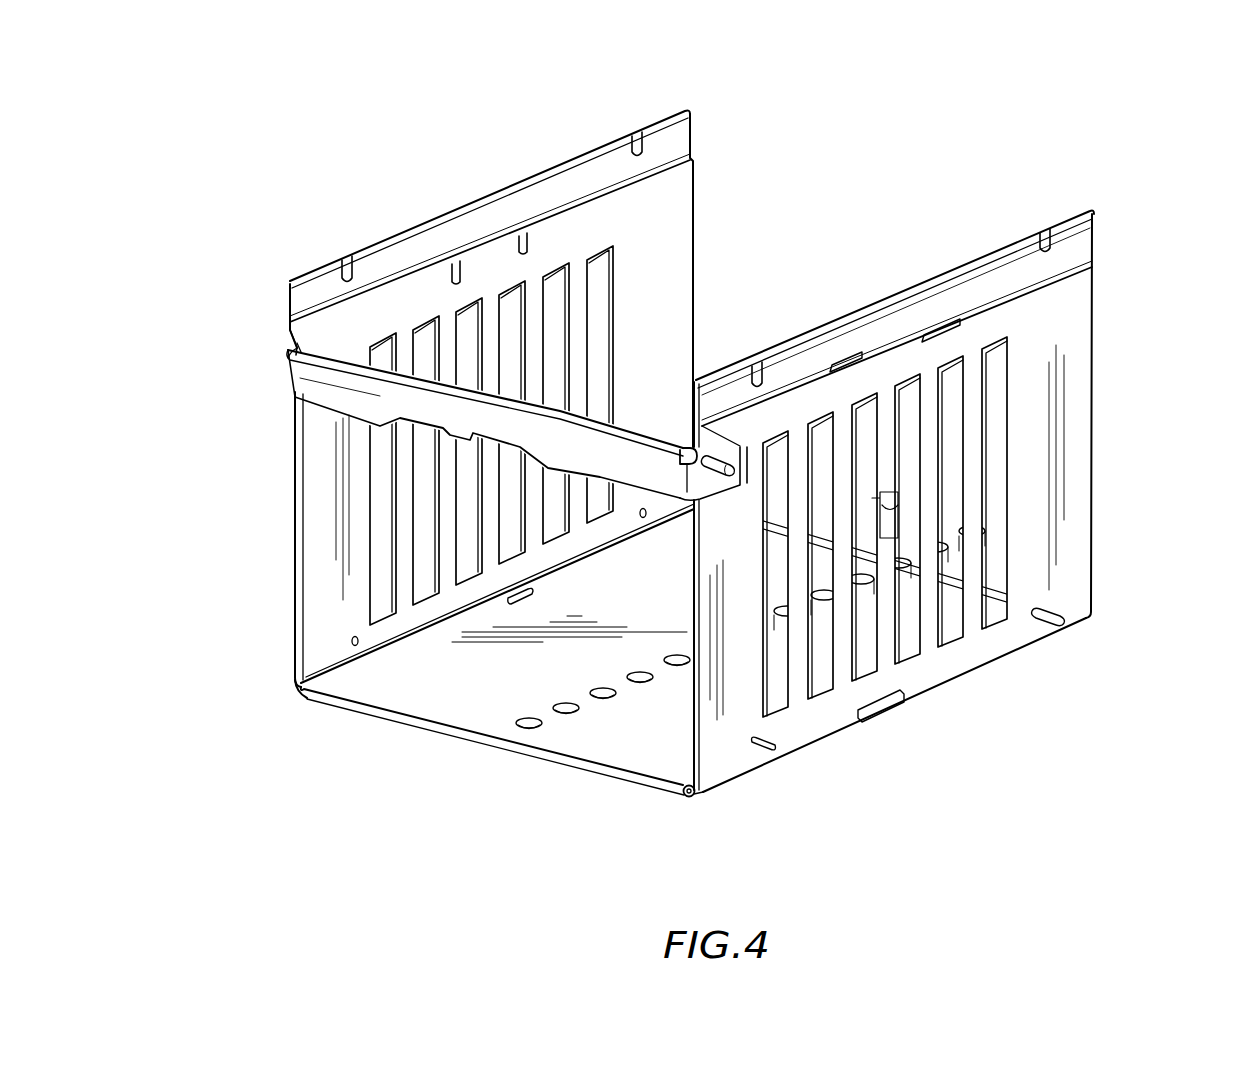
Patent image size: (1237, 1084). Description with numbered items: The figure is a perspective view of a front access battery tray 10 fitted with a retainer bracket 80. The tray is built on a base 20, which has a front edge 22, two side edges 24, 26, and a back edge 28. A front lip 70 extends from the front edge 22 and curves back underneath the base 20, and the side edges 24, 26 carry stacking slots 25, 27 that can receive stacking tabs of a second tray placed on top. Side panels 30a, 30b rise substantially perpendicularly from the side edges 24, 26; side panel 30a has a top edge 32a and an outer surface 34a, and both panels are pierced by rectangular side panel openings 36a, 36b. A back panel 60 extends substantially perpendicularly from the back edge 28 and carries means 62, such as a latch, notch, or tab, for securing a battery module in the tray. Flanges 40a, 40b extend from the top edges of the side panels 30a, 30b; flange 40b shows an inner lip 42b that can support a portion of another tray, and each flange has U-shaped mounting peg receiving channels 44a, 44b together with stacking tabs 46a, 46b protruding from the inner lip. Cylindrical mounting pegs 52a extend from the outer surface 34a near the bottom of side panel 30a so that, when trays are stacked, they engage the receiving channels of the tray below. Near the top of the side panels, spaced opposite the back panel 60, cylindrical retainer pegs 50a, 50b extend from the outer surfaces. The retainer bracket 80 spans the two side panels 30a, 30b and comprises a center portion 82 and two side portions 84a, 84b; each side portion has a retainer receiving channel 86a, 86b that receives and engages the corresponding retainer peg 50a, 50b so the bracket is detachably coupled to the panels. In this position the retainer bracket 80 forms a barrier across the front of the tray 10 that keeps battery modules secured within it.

The front access battery tray 10 is at (1166, 112).
The base 20 is at (670, 790).
The front edge 22 is at (440, 738).
The side edge 24 is at (298, 690).
The stacking slot 25 is at (510, 600).
The side edge 26 is at (696, 798).
The stacking slot 27 is at (880, 700).
The back edge 28 is at (1010, 640).
The side panel 30a is at (1092, 408).
The side panel 30b is at (295, 485).
The top edge 32a is at (1093, 264).
The outer surface 34a is at (1085, 480).
The side panel openings 36a is at (960, 680).
The side panel openings 36b is at (378, 345).
The flange 40a is at (945, 268).
The flange 40b is at (520, 183).
The inner lip 42b is at (700, 165).
The mounting peg receiving channels 44a is at (752, 364).
The mounting peg receiving channels 44b is at (345, 256).
The stacking tab 46a is at (855, 365).
The stacking tab 46b is at (456, 262).
The retainer peg 50a is at (712, 440).
The retainer peg 50b is at (292, 350).
The mounting pegs 52a is at (775, 745).
The back panel 60 is at (965, 445).
The means for securing 62 is at (887, 492).
The front lip 70 is at (620, 785).
The retainer bracket 80 is at (295, 382).
The center portion 82 is at (580, 402).
The side portion 84a is at (682, 447).
The side portion 84b is at (298, 355).
The retainer receiving channel 86a is at (740, 483).
The retainer receiving channel 86b is at (296, 350).